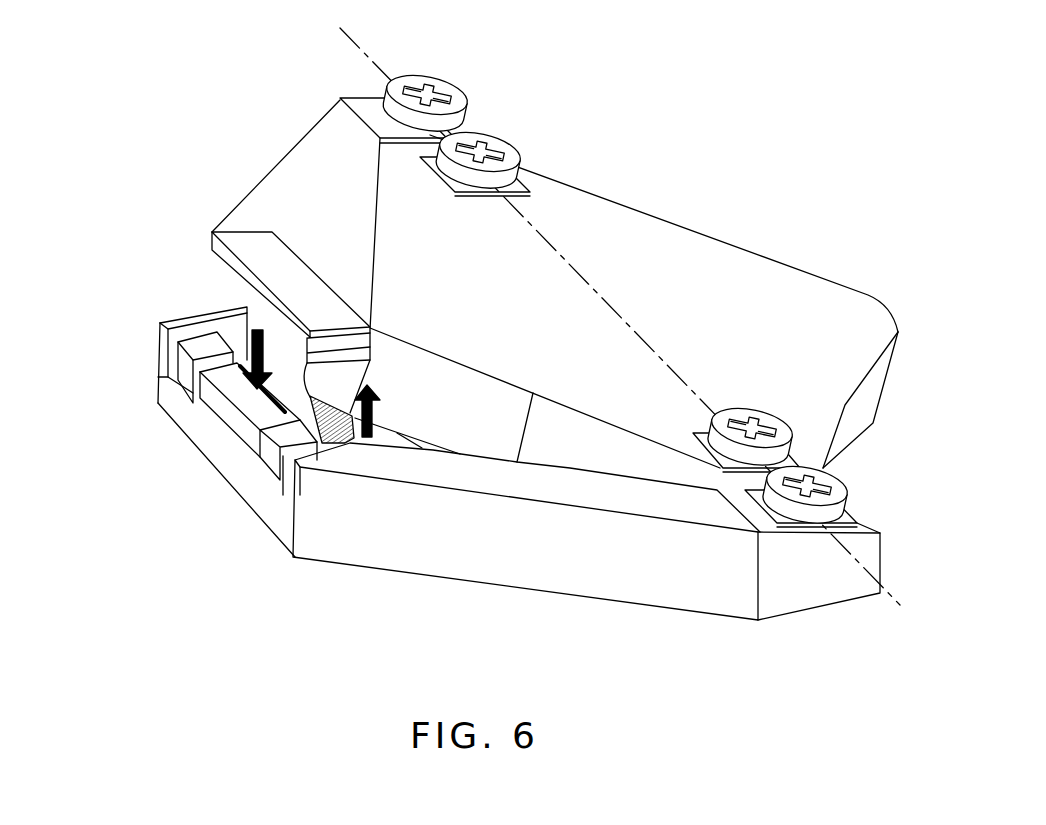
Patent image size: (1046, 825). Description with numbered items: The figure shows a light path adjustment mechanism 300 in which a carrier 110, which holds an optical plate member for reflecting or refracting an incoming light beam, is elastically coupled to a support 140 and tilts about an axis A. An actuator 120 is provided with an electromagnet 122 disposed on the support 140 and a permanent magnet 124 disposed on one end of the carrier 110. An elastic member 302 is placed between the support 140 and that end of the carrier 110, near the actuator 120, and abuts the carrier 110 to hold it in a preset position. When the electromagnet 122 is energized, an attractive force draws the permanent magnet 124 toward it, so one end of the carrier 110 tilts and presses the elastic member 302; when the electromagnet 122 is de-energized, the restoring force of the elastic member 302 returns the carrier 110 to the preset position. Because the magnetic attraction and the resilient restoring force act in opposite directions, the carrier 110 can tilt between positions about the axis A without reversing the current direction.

The light path adjustment mechanism 300 is at (165, 83).
The carrier 110 is at (637, 253).
The actuator 120 is at (90, 228).
The electromagnet 122 is at (210, 405).
The permanent magnet 124 is at (247, 242).
The support 140 is at (452, 557).
The elastic member 302 is at (326, 440).
The axis A is at (655, 348).